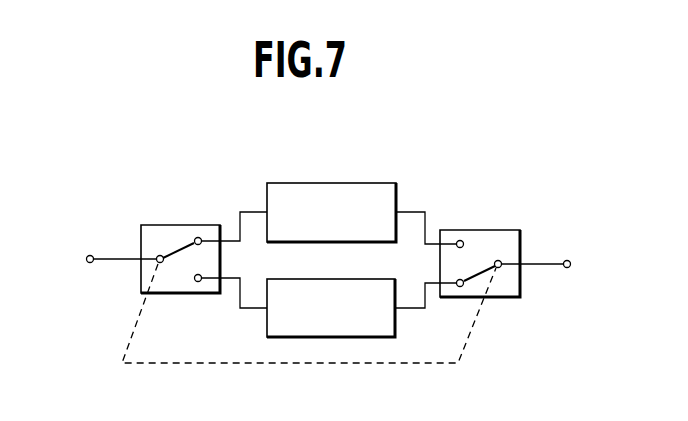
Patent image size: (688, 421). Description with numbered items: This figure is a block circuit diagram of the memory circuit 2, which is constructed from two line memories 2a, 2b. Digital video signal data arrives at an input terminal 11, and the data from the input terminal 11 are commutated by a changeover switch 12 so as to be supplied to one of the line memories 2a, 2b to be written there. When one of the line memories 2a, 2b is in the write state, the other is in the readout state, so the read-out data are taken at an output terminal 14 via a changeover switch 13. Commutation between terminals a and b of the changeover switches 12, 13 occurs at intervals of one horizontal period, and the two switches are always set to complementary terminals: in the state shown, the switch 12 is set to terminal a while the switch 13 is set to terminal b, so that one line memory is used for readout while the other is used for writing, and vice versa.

The memory circuit 2 is at (477, 199).
The line memory 2a is at (352, 182).
The line memory 2b is at (383, 338).
The input terminal 11 is at (90, 253).
The changeover switch 12 is at (180, 224).
The changeover switch 13 is at (496, 229).
The output terminal 14 is at (568, 258).